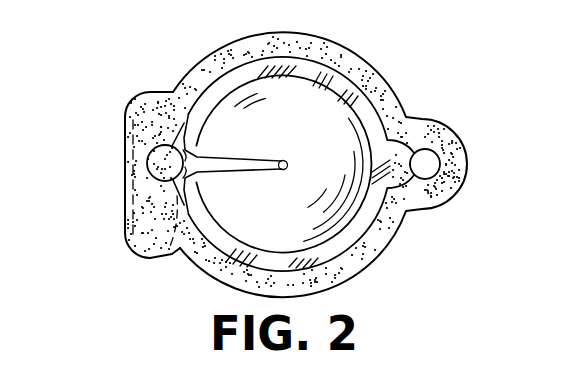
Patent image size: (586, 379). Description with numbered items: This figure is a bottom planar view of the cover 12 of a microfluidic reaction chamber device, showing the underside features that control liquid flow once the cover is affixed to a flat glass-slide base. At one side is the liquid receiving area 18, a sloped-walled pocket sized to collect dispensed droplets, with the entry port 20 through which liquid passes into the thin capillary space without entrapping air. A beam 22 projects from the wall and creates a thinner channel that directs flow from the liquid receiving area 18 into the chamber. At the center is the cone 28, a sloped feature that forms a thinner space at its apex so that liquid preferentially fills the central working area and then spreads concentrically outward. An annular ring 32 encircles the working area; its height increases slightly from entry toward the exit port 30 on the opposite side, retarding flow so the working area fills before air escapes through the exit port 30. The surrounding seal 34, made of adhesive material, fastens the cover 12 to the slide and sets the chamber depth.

The cover 12 is at (182, 50).
The liquid receiving area 18 is at (150, 107).
The entry port 20 is at (155, 165).
The beam 22 is at (238, 169).
The cone 28 is at (325, 137).
The exit port 30 is at (423, 151).
The ring 32 is at (352, 235).
The seal 34 is at (370, 73).